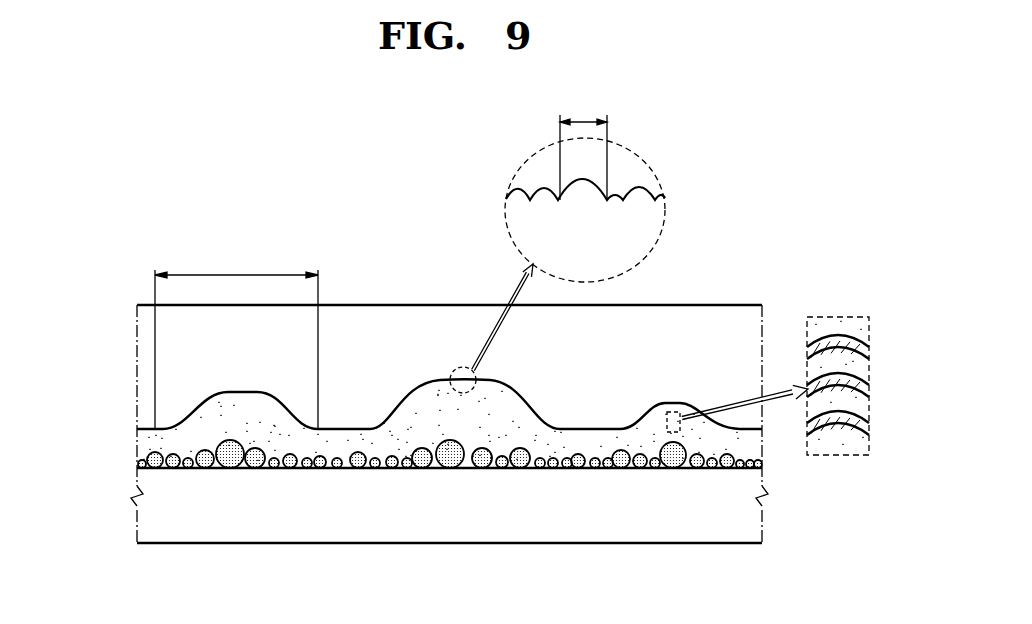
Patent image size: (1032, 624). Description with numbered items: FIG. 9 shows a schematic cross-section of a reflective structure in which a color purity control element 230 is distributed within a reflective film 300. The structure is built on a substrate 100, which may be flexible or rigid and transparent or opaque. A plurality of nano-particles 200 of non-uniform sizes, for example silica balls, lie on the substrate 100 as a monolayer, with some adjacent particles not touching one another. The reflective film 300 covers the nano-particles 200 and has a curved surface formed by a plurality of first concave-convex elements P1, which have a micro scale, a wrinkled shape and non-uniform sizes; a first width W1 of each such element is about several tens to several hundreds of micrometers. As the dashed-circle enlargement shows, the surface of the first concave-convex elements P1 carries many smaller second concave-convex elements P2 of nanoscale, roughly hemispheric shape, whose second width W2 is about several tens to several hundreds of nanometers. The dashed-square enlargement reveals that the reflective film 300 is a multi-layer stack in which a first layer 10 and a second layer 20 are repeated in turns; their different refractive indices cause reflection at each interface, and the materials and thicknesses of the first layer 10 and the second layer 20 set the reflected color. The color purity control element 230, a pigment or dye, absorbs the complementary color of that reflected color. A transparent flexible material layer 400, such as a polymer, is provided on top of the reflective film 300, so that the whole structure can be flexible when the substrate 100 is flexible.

The substrate 100 is at (140, 527).
The nano-particles 200 is at (137, 463).
The reflective film 300 is at (140, 436).
The transparent flexible material layer 400 is at (145, 352).
The color purity control element 230 is at (519, 416).
The second layer 20 is at (866, 403).
The first layer 10 is at (861, 422).
The first concave-convex elements P1 is at (408, 379).
The second concave-convex elements P2 is at (549, 174).
The first width W1 is at (236, 338).
The second width W2 is at (583, 147).